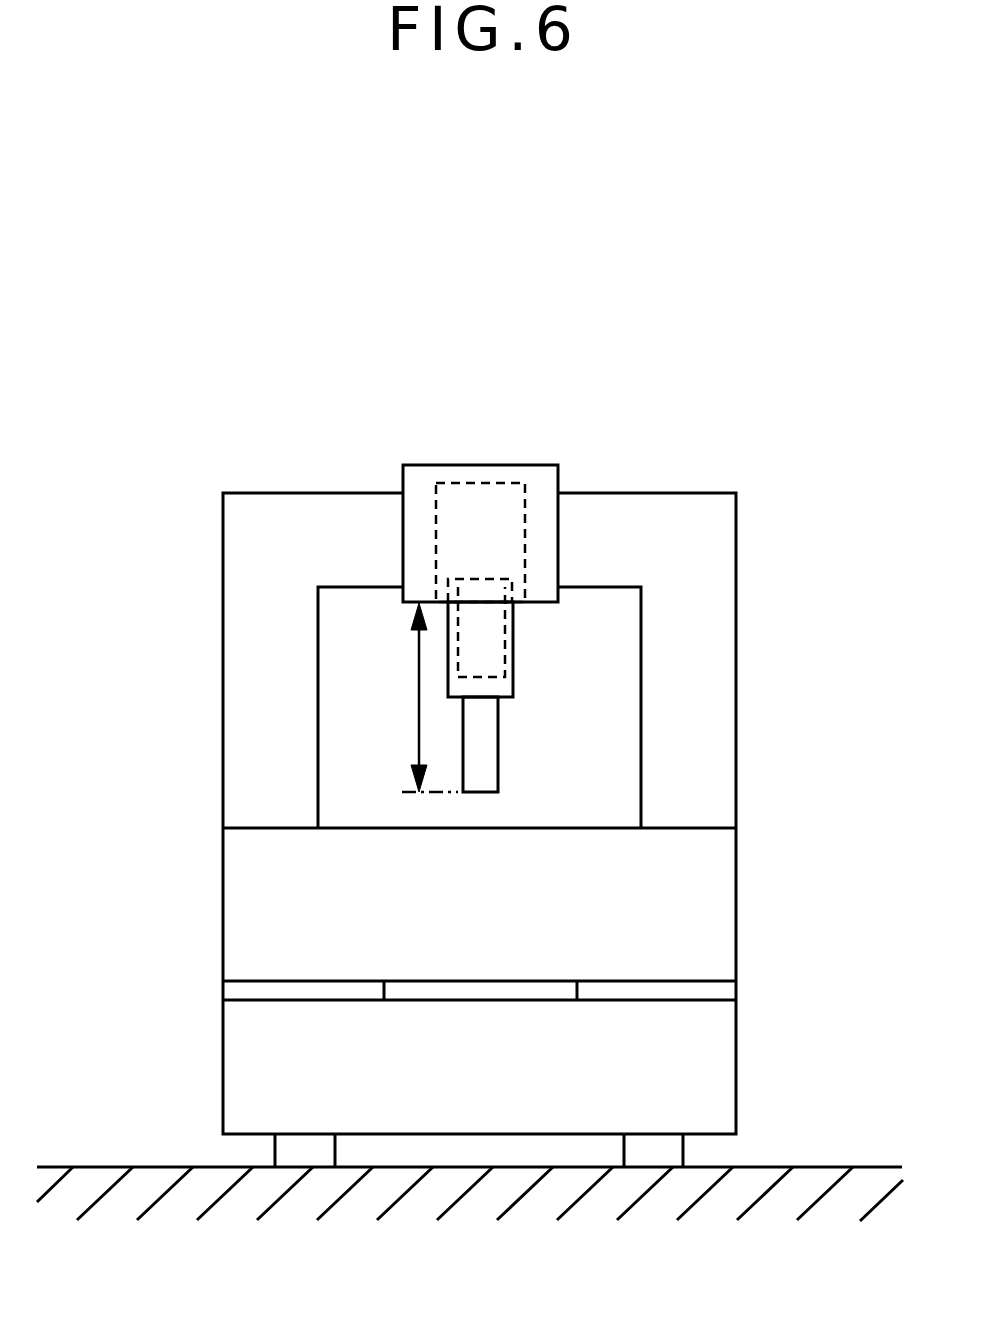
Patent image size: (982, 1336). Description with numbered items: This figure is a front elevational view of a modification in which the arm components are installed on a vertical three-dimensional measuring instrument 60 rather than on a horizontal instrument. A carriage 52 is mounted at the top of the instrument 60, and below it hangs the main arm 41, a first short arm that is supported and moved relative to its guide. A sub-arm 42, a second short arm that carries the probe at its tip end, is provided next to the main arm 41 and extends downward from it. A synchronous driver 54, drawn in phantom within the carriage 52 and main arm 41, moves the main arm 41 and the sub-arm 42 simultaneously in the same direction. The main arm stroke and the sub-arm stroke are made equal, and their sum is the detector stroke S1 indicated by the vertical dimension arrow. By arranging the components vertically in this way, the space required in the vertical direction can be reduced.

The vertical three-dimensional measuring instrument 60 is at (313, 457).
The carriage 52 is at (515, 465).
The synchronous driver 54 is at (467, 641).
The main arm 41 is at (508, 662).
The sub-arm 42 is at (488, 753).
The detector stroke S1 is at (416, 697).